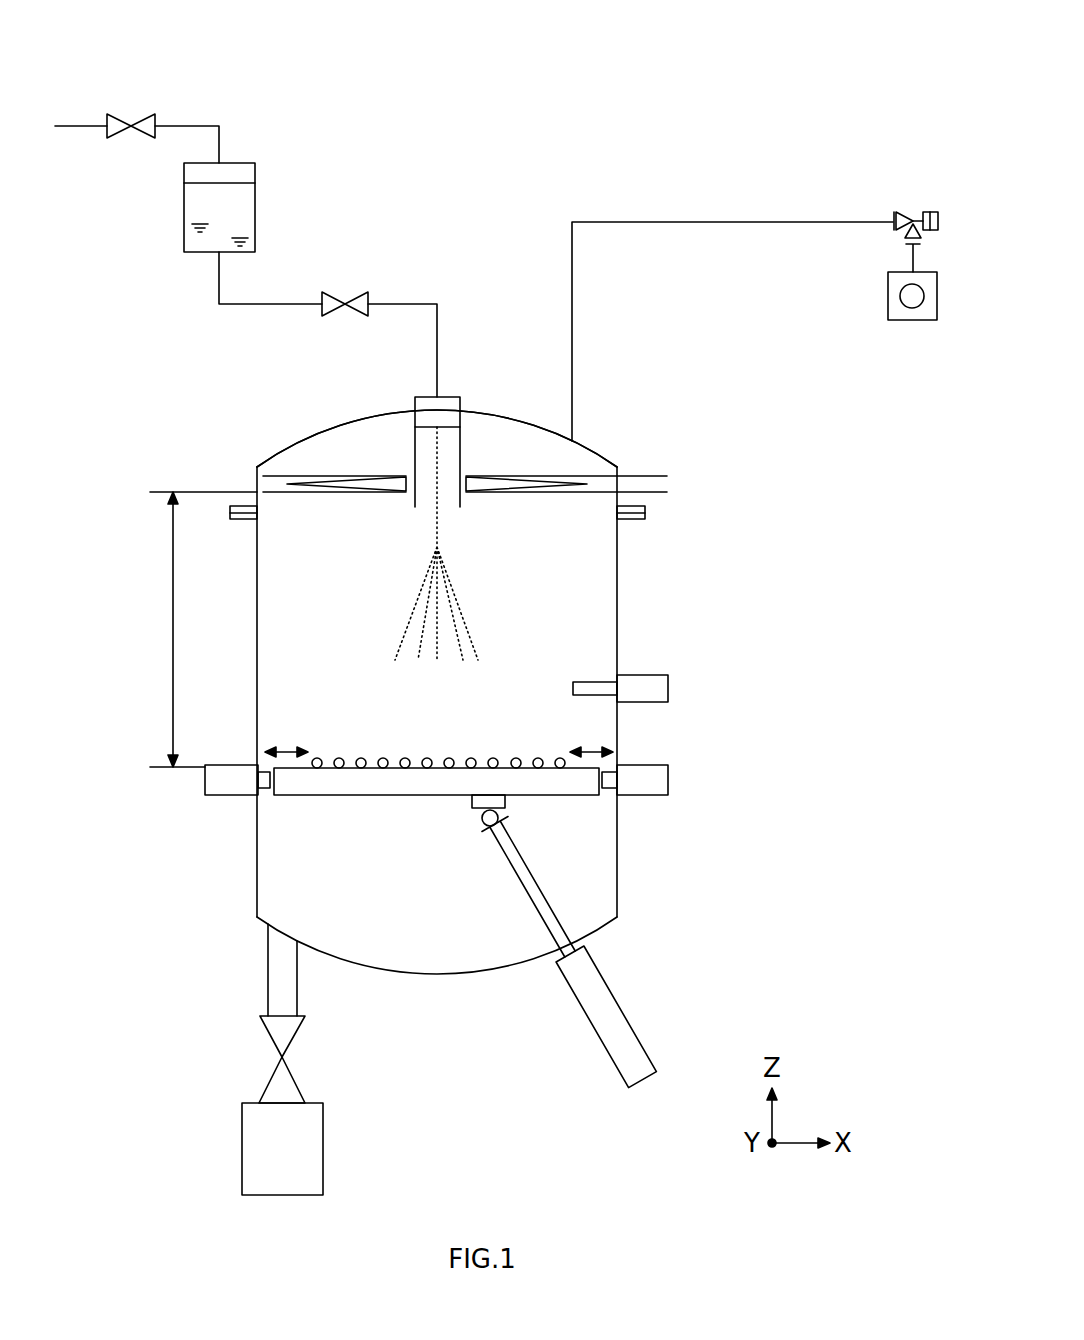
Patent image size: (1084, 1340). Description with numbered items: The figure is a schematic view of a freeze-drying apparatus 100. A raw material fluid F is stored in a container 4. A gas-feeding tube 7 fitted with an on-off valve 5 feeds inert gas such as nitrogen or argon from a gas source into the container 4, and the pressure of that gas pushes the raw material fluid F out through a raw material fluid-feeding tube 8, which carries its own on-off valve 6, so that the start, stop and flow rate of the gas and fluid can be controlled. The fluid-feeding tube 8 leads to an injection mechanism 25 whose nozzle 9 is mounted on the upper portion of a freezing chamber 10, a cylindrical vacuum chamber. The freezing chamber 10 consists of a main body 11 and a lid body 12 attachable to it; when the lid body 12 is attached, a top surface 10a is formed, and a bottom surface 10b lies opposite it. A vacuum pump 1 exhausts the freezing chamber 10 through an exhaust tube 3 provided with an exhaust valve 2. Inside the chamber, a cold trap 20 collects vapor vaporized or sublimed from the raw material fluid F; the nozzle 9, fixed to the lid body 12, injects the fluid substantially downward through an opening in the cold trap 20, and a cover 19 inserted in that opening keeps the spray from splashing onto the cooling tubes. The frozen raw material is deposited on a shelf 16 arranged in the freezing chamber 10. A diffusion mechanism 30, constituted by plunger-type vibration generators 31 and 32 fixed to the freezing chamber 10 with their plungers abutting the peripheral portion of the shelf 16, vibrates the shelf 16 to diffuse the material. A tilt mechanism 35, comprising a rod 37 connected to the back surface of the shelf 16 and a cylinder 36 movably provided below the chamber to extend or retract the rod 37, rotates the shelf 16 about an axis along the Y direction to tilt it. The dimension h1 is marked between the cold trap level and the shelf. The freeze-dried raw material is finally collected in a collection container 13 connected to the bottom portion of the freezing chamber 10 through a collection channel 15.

The freeze-drying apparatus 100 is at (482, 90).
The vacuum pump 1 is at (888, 298).
The exhaust valve 2 is at (908, 212).
The exhaust tube 3 is at (735, 222).
The container 4 is at (255, 205).
The on-off valve 5 is at (140, 113).
The on-off valve 6 is at (355, 293).
The gas-feeding tube 7 is at (198, 122).
The raw material fluid-feeding tube 8 is at (415, 300).
The nozzle 9 is at (455, 397).
The freezing chamber 10 is at (464, 704).
The top surface 10a is at (300, 445).
The bottom surface 10b is at (437, 974).
The main body 11 is at (617, 632).
The lid body 12 is at (515, 421).
The collection container 13 is at (323, 1145).
The collection channel 15 is at (268, 953).
The shelf 16 is at (300, 797).
The cover 19 is at (412, 455).
The cold trap 20 is at (650, 470).
The injection mechanism 25 is at (406, 498).
The diffusion mechanism 30 is at (478, 750).
The vibration generator 31 is at (449, 796).
The vibration generator 32 is at (668, 688).
The tilt mechanism 35 is at (589, 941).
The cylinder 36 is at (590, 1018).
The rod 37 is at (528, 897).
The raw material fluid F is at (190, 200).
The height h1 is at (194, 629).